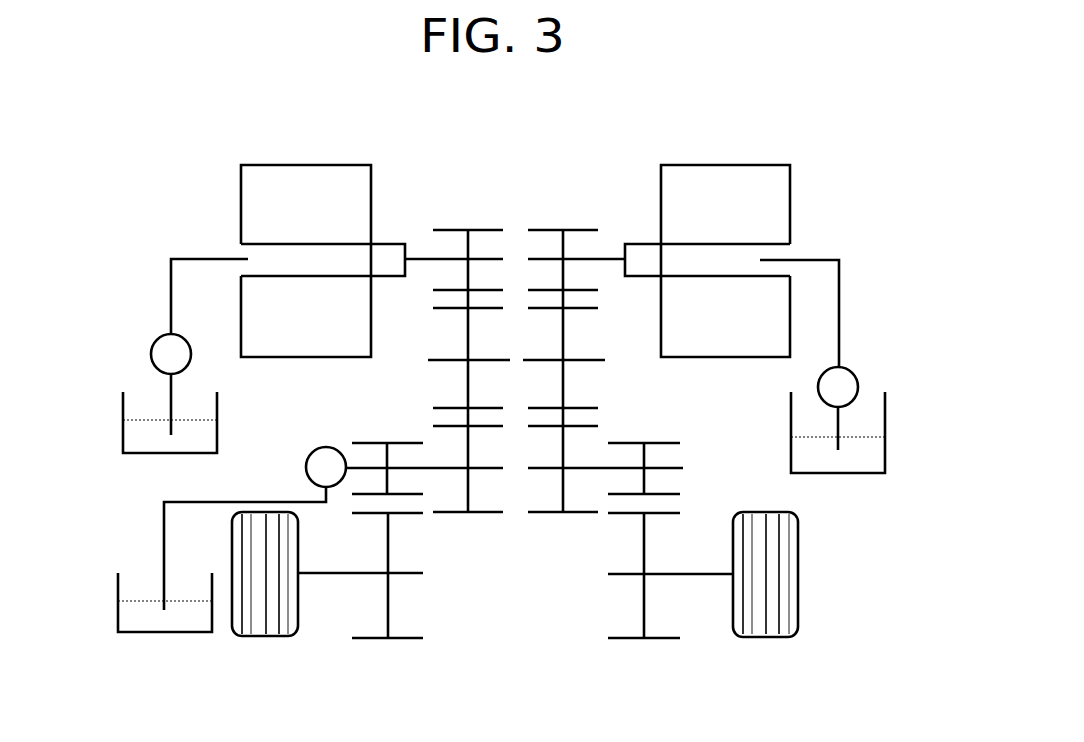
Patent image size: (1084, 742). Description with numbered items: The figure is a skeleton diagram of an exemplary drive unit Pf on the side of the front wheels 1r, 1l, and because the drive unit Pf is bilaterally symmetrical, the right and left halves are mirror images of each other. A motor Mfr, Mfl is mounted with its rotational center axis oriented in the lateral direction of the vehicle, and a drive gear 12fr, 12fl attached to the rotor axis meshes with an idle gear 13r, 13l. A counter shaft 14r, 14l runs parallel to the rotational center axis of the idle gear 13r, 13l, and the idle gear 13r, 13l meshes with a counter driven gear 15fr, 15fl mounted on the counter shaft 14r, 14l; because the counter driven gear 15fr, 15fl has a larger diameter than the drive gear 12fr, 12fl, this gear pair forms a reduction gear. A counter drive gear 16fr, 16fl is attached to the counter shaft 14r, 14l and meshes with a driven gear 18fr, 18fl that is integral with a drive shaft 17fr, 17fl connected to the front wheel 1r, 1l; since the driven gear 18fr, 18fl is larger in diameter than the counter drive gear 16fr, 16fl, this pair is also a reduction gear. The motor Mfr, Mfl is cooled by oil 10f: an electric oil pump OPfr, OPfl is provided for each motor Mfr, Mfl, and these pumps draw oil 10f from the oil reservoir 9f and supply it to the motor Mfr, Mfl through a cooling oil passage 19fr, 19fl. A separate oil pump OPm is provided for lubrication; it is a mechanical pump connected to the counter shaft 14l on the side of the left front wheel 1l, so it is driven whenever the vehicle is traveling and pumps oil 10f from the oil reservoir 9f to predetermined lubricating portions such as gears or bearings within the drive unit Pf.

The drive unit Pf is at (618, 138).
The motor Mfl is at (330, 222).
The motor Mfr is at (750, 222).
The drive gear 12fl is at (455, 229).
The drive gear 12fr is at (568, 229).
The idle gear 13l is at (448, 407).
The idle gear 13r is at (584, 309).
The counter shaft 14l is at (353, 471).
The counter shaft 14r is at (665, 470).
The counter driven gear 15fl is at (486, 514).
The counter driven gear 15fr is at (540, 514).
The counter drive gear 16fl is at (420, 488).
The counter drive gear 16fr is at (660, 441).
The drive shaft 17fl is at (325, 577).
The drive shaft 17fr is at (687, 578).
The driven gear 18fl is at (375, 642).
The driven gear 18fr is at (630, 642).
The cooling oil passage 19fl is at (169, 288).
The cooling oil passage 19fr is at (840, 268).
The front wheel 1l is at (272, 640).
The front wheel 1r is at (800, 596).
The oil reservoir 9f is at (140, 457).
The oil 10f is at (140, 433).
The electric oil pump OPfl is at (151, 357).
The electric oil pump OPfr is at (853, 367).
The oil pump OPm is at (318, 449).